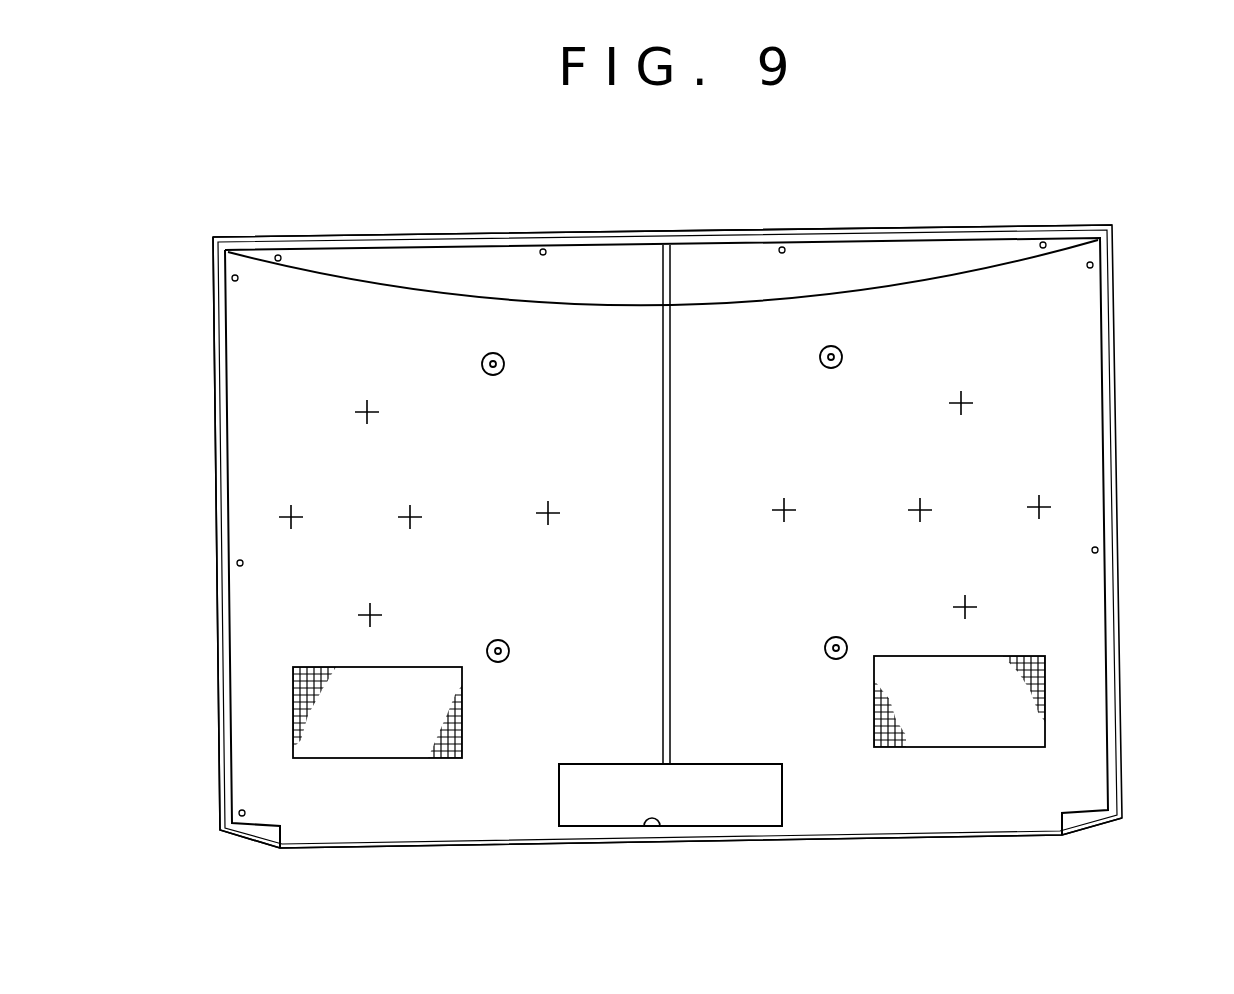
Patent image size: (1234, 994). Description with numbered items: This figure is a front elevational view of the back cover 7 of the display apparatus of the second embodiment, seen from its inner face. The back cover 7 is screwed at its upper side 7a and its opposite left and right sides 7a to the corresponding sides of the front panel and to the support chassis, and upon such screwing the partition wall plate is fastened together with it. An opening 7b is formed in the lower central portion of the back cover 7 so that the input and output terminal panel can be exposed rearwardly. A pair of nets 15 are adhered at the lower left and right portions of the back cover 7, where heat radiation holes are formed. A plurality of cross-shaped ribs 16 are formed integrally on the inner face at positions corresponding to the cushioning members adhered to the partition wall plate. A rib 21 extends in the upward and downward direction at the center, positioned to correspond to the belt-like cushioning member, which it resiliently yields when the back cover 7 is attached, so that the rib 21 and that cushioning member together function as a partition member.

The back cover 7 is at (681, 231).
The upper side and opposite left and right sides of the back cover 7a is at (838, 236).
The opening 7b is at (661, 822).
The nets 15 is at (293, 690).
The cross-shaped ribs 16 is at (371, 412).
The rib 21 is at (670, 480).